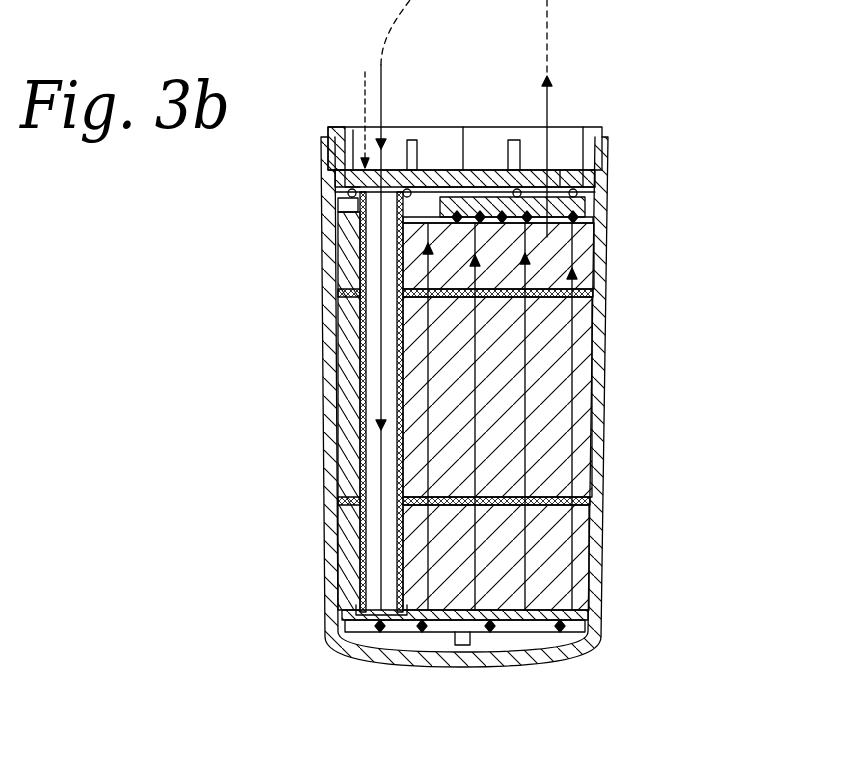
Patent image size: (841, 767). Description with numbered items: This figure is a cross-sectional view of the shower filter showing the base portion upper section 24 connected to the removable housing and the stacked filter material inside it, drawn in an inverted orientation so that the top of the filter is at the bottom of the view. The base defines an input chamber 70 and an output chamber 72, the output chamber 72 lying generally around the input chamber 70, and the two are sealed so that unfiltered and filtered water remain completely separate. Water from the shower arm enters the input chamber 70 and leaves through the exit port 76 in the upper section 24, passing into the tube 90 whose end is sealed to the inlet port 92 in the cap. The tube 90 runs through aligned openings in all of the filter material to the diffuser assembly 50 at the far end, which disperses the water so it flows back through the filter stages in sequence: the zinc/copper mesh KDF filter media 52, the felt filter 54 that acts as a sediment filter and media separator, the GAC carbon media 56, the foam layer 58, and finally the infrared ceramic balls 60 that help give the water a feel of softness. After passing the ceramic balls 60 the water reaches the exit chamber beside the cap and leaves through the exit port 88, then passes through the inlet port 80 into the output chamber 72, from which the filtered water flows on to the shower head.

The base portion upper section 24 is at (338, 126).
The diffuser assembly 50 is at (583, 627).
The KDF-55 filter media 52 is at (585, 540).
The felt filter 54 is at (578, 497).
The GAC carbon media 56 is at (583, 382).
The foam layer 58 is at (605, 290).
The infrared ceramic balls 60 is at (597, 256).
The input chamber 70 is at (436, 138).
The output chamber 72 is at (560, 173).
The exit port 76 is at (364, 72).
The inlet port 80 is at (580, 167).
The exit port 88 is at (594, 193).
The tube 90 is at (360, 423).
The inlet port 92 is at (372, 198).